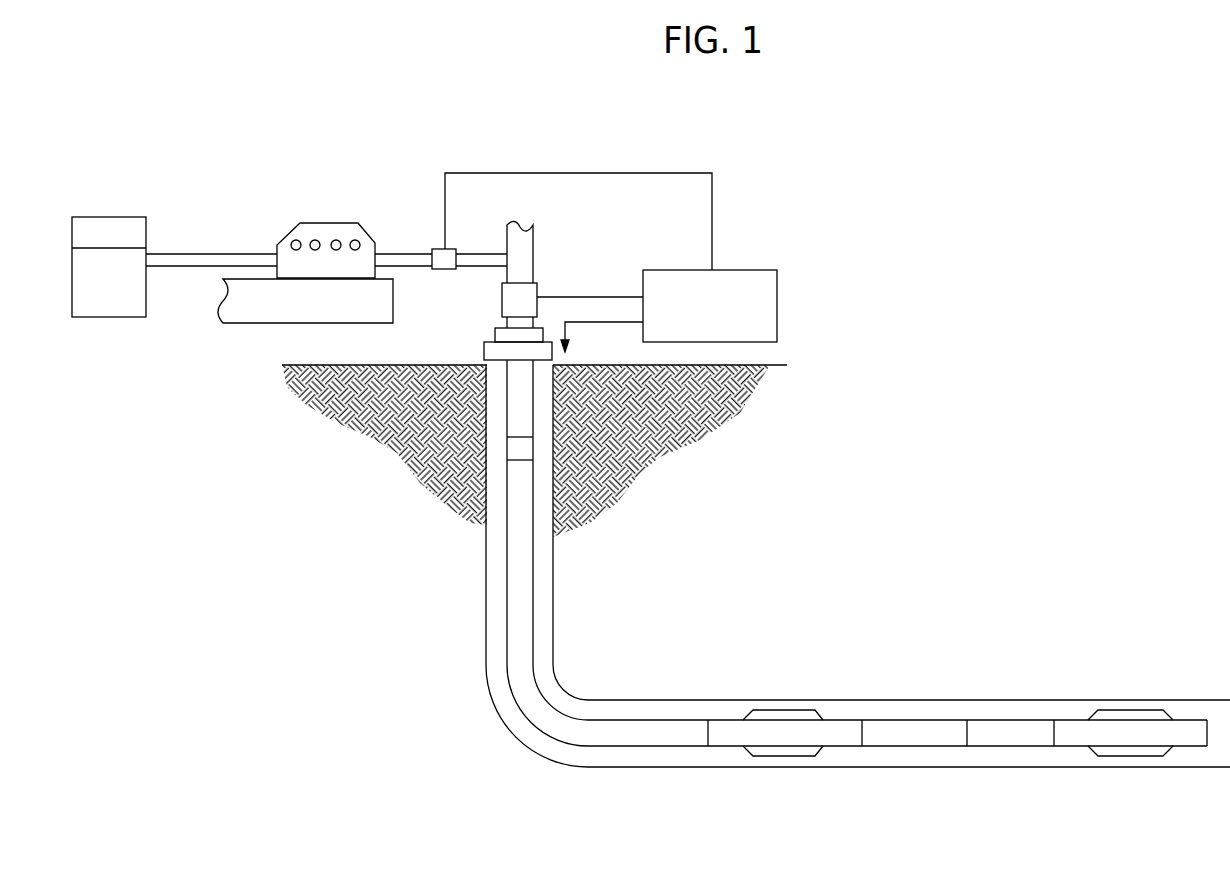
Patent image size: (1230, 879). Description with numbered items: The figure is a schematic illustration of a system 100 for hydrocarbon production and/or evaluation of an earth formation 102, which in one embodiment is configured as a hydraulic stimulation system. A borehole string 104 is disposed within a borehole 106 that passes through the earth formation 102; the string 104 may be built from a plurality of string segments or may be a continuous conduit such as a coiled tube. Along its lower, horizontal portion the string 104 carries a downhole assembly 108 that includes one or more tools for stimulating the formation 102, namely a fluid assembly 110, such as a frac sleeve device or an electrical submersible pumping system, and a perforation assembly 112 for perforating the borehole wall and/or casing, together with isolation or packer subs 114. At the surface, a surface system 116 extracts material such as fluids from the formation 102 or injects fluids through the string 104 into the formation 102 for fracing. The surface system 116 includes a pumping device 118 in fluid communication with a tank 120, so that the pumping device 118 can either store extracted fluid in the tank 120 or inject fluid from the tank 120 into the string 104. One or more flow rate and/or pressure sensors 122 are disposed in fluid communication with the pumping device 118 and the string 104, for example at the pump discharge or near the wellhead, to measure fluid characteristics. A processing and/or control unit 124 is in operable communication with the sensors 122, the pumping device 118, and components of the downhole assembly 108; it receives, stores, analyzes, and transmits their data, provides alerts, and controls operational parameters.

The system 100 is at (986, 320).
The earth formation 102 is at (413, 457).
The borehole string 104 is at (517, 590).
The borehole 106 is at (495, 672).
The downhole assembly 108 is at (1052, 655).
The fluid assembly 110 is at (900, 737).
The perforation assembly 112 is at (993, 727).
The packer sub 114 is at (768, 720).
The surface system 116 is at (260, 189).
The pumping device 118 is at (347, 232).
The tank 120 is at (107, 297).
The flow rate and/or pressure sensor 122 is at (508, 297).
The processing and/or control unit 124 is at (689, 311).